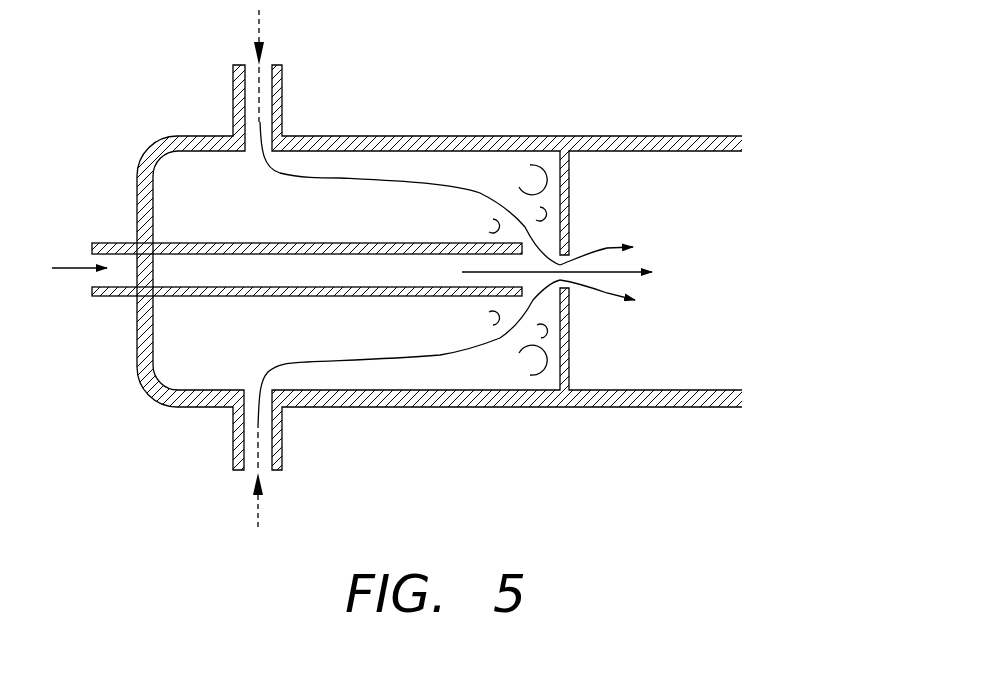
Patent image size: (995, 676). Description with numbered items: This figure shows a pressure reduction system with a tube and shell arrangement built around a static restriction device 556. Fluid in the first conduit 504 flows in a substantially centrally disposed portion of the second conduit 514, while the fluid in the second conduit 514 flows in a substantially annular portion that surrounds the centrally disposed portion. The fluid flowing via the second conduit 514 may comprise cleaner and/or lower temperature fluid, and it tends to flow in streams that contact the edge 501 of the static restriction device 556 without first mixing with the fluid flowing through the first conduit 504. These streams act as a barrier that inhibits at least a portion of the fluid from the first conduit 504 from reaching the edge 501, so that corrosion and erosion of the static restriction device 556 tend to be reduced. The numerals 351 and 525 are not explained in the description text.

The static restriction device 556 is at (543, 122).
The second conduit 514 is at (284, 274).
The fluid flow path 351 is at (409, 274).
The edge of the restriction device 501 is at (592, 250).
The mixed outlet stream 525 is at (602, 273).
The first conduit 504 is at (68, 285).